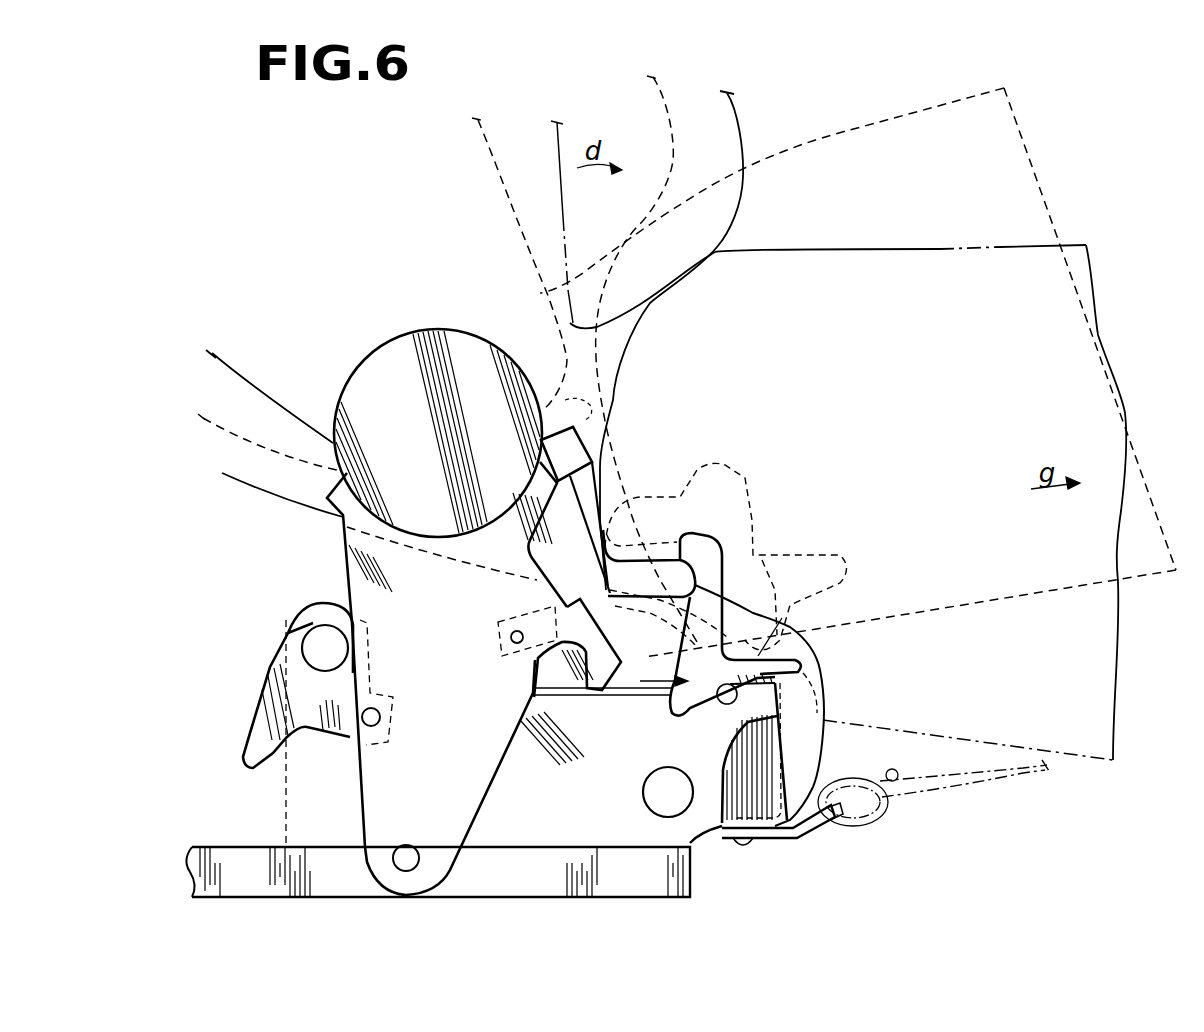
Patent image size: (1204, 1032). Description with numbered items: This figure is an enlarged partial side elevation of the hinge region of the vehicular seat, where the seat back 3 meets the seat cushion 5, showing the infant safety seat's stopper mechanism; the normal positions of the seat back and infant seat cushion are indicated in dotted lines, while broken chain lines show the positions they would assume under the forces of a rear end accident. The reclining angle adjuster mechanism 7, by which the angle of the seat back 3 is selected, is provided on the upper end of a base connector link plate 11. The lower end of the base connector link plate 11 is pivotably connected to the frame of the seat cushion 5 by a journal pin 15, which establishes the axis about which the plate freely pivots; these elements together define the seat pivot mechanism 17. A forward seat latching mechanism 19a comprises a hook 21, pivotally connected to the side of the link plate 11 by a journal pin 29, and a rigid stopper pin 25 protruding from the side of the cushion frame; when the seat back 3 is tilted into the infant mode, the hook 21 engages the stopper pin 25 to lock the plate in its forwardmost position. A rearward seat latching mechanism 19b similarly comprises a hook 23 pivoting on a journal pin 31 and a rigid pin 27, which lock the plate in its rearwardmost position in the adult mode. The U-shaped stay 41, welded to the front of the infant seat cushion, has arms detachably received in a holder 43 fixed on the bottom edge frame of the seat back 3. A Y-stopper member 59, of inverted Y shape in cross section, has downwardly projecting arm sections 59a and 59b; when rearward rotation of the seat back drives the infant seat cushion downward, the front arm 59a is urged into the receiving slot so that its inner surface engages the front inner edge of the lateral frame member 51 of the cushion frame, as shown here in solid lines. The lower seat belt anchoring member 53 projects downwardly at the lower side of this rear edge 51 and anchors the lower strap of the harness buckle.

The seat back 3 is at (737, 140).
The seat cushion 5 is at (262, 492).
The reclining angle adjuster mechanism 7 is at (392, 352).
The base connector link plate 11 is at (460, 825).
The journal pin 15 is at (406, 872).
The seat pivot mechanism 17 is at (503, 808).
The forward seat latching mechanism 19a is at (252, 725).
The rearward seat latching mechanism 19b is at (628, 765).
The hook 21 is at (258, 720).
The hook 23 is at (582, 645).
The rigid stopper pin 25 is at (313, 654).
The rigid pin 27 is at (637, 787).
The journal pin 29 is at (381, 717).
The journal pin 31 is at (510, 637).
The U-shaped stay 41 is at (575, 512).
The holder 43 is at (578, 443).
The lateral frame member 51 is at (790, 757).
The lower seat belt anchoring member 53 is at (780, 840).
The Y-stopper member 59 is at (747, 583).
The arm section 59a is at (667, 715).
The arm section 59b is at (803, 671).